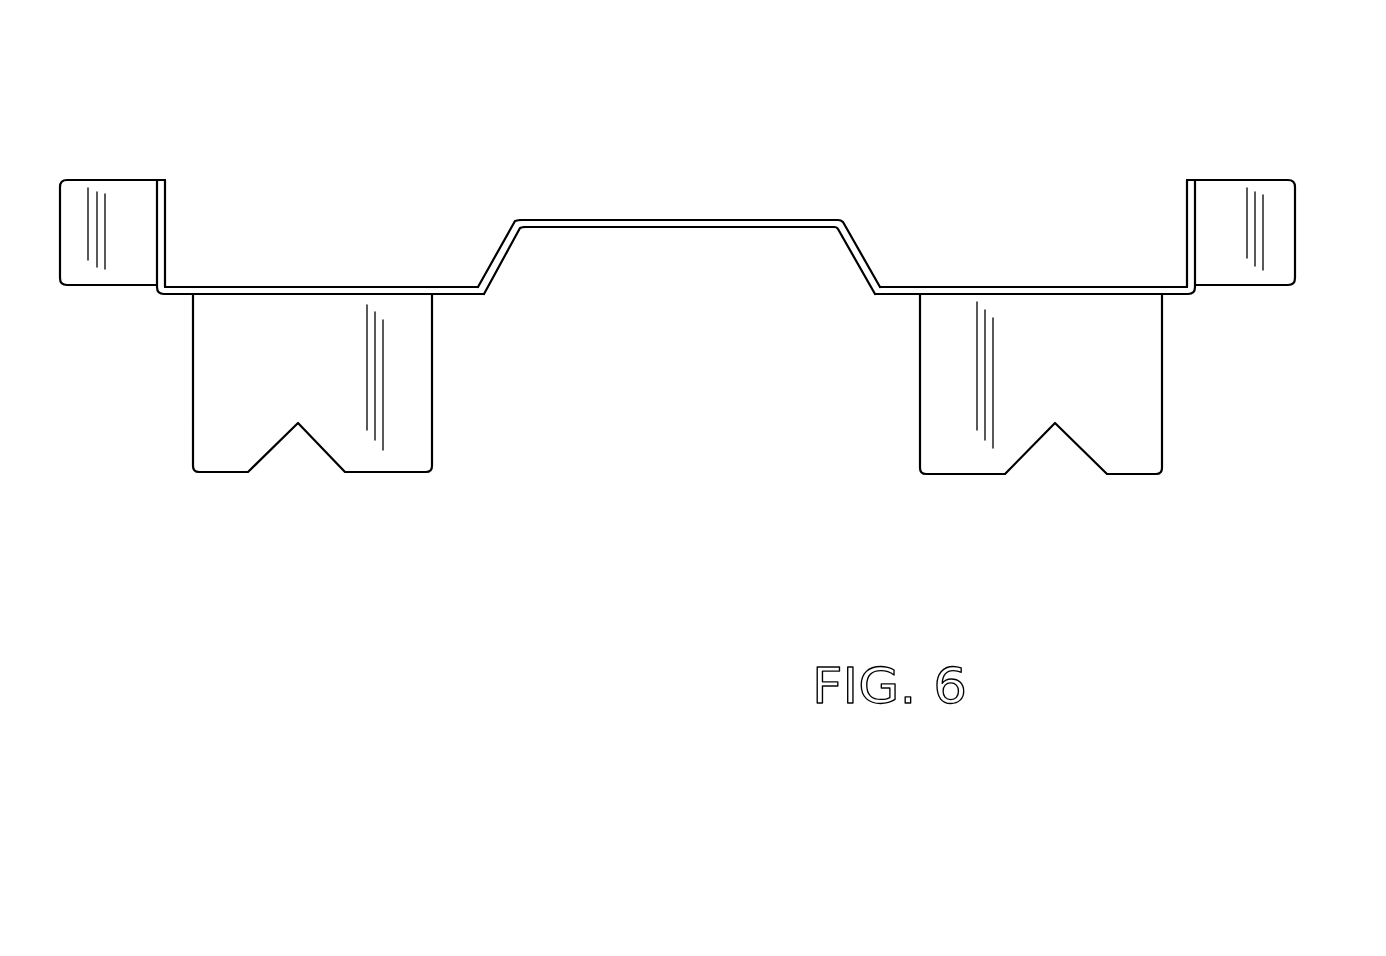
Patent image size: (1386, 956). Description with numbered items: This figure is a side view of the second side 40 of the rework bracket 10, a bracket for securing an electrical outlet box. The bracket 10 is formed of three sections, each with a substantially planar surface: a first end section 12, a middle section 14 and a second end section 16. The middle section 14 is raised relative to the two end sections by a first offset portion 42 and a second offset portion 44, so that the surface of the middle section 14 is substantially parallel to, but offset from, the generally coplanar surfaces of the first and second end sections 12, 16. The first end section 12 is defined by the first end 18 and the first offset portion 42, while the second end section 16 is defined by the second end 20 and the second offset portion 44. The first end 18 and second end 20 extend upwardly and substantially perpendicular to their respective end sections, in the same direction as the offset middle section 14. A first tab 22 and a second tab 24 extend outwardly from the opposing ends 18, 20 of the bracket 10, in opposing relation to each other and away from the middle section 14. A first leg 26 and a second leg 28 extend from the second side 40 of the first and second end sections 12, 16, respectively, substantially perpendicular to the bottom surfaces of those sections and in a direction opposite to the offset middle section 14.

The bracket 10 is at (927, 538).
The first end section 12 is at (904, 282).
The middle section 14 is at (732, 219).
The second end section 16 is at (453, 283).
The first end 18 is at (1186, 230).
The second end 20 is at (168, 235).
The first tab 22 is at (1270, 242).
The second tab 24 is at (122, 245).
The first leg 26 is at (1142, 445).
The second leg 28 is at (207, 433).
The second side 40 is at (593, 228).
The first offset portion 42 is at (863, 252).
The second offset portion 44 is at (488, 255).